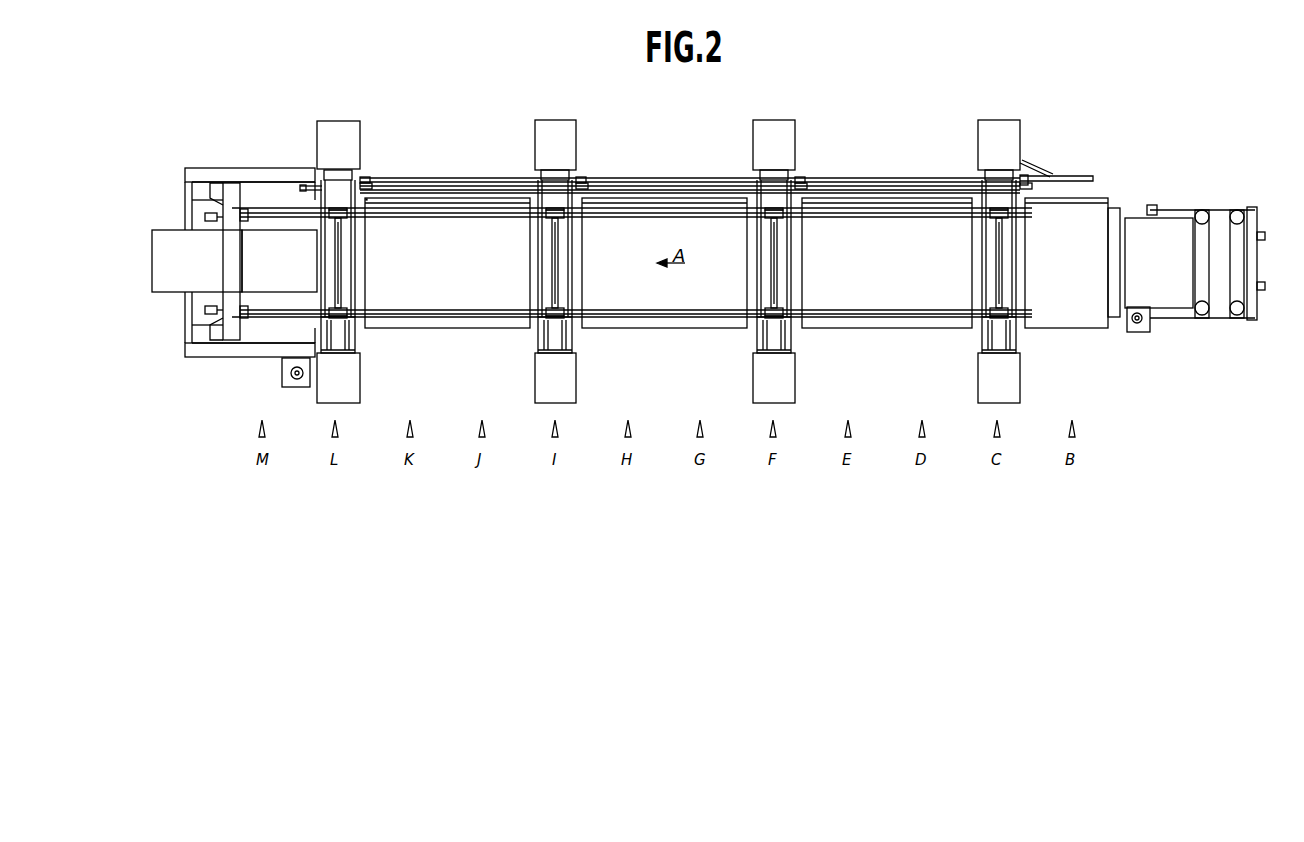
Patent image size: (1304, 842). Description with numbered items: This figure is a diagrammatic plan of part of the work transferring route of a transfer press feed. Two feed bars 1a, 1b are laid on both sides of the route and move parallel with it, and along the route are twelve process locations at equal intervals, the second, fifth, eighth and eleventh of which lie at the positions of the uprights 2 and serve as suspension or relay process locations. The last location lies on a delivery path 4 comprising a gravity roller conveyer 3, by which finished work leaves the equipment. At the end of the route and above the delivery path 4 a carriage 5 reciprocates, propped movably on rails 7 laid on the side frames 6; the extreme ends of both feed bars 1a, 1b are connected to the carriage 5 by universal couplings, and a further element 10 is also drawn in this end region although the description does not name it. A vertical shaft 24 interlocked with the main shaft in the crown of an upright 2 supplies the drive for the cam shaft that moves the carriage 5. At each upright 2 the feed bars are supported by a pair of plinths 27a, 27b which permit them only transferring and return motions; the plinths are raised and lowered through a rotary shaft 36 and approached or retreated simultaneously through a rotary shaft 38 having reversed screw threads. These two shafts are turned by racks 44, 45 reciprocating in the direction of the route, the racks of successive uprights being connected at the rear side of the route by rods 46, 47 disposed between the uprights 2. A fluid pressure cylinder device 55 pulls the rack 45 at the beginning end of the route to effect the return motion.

The feed bar 1a is at (634, 320).
The feed bar 1b is at (632, 215).
The upright 2 is at (338, 132).
The gravity roller conveyer 3 is at (200, 275).
The delivery path 4 is at (168, 242).
The carriage 5 is at (222, 325).
The side frame 6 is at (208, 175).
The rail 7 is at (255, 190).
The guide rod 10 is at (248, 213).
The vertical shaft 24 is at (297, 385).
The plinth 27a is at (345, 322).
The plinth 27b is at (345, 222).
The rotary shaft 36 is at (345, 262).
The rotary shaft 38 is at (345, 282).
The rack 44 is at (362, 180).
The rack 45 is at (372, 185).
The rod 46 is at (463, 188).
The rod 47 is at (497, 178).
The fluid pressure cylinder device 55 is at (1085, 177).